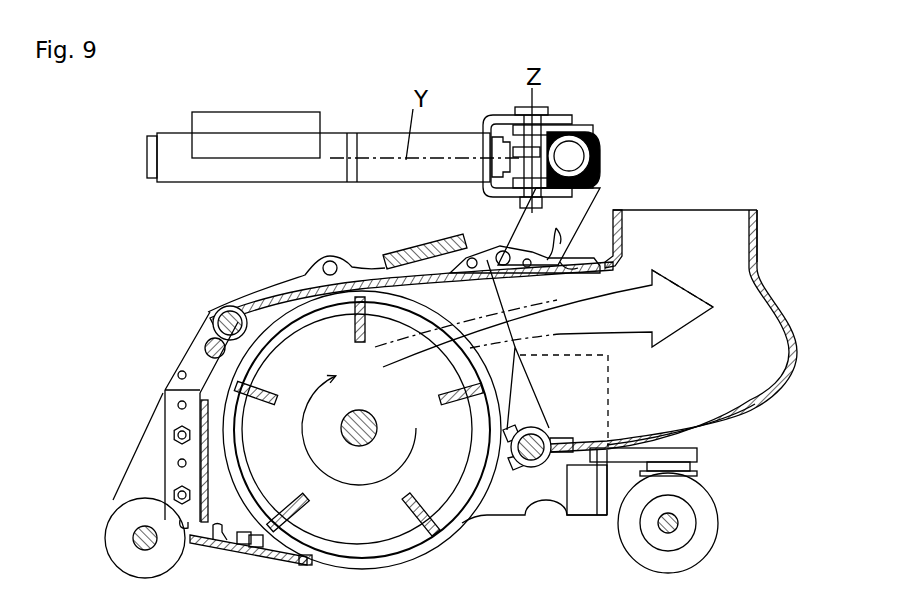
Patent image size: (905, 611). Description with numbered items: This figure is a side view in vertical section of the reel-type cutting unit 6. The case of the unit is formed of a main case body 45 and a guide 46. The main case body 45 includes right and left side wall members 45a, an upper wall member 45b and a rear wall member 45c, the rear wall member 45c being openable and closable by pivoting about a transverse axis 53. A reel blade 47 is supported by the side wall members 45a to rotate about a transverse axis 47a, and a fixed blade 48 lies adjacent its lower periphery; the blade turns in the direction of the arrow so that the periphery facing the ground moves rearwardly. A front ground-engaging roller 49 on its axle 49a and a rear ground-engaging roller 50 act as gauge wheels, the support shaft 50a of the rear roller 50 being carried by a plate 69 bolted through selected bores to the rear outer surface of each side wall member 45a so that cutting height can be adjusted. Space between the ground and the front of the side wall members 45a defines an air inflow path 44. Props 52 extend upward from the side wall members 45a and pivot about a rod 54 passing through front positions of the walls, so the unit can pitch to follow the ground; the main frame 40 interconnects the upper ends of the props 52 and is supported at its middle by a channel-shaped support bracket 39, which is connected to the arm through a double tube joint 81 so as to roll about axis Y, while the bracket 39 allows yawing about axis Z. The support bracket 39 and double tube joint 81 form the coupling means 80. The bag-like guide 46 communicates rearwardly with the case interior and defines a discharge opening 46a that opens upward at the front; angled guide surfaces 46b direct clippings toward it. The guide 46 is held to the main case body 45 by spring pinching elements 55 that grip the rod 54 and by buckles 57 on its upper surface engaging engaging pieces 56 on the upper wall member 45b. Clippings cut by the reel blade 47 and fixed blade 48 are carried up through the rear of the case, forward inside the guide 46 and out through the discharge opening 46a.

The reel-type cutting unit 6 is at (746, 126).
The support bracket 39 is at (494, 118).
The main frame 40 is at (588, 157).
The air inflow path 44 is at (600, 564).
The main case body 45 is at (265, 283).
The side wall member 45a is at (583, 503).
The upper wall member 45b is at (360, 283).
The rear wall member 45c is at (165, 385).
The guide 46 is at (771, 293).
The discharge opening 46a is at (747, 222).
The angled guide surface 46b is at (756, 397).
The reel blade 47 is at (413, 543).
The rotor shaft 47a is at (366, 420).
The fixed blade 48 is at (270, 560).
The front ground-engaging roller 49 is at (710, 515).
The rear wheel axle 49a is at (668, 523).
The rear ground-engaging roller 50 is at (111, 528).
The support shaft 50a is at (143, 538).
The prop 52 is at (592, 197).
The transverse axis 53 is at (218, 343).
The rod 54 is at (507, 468).
The pinching element 55 is at (540, 465).
The engaging piece 56 is at (443, 252).
The buckle 57 is at (556, 246).
The plate 69 is at (143, 448).
The coupling means 80 is at (376, 122).
The double tube joint 81 is at (253, 183).